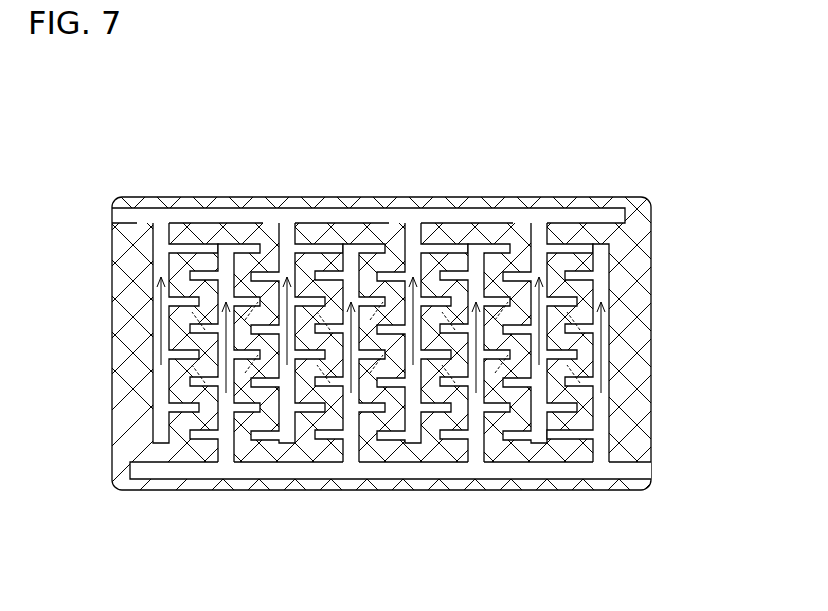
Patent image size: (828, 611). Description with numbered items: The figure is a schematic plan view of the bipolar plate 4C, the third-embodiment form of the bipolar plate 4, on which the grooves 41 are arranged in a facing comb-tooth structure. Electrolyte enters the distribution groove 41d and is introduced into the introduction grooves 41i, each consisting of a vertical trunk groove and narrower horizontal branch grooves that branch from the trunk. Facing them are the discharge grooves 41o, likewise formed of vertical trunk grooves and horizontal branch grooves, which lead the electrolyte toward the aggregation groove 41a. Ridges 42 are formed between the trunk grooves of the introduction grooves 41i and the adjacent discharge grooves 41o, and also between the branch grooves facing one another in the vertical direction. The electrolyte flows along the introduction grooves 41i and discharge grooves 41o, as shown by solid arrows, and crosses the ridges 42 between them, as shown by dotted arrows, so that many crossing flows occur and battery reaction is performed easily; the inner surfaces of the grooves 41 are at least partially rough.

The bipolar plate 4C is at (379, 305).
The bipolar plate 4 is at (379, 305).
The grooves 41 is at (381, 348).
The aggregation groove 41a is at (295, 212).
The distribution groove 41d is at (312, 473).
The discharge grooves 41o is at (540, 230).
The introduction grooves 41i is at (600, 448).
The ridges 42 is at (158, 258).